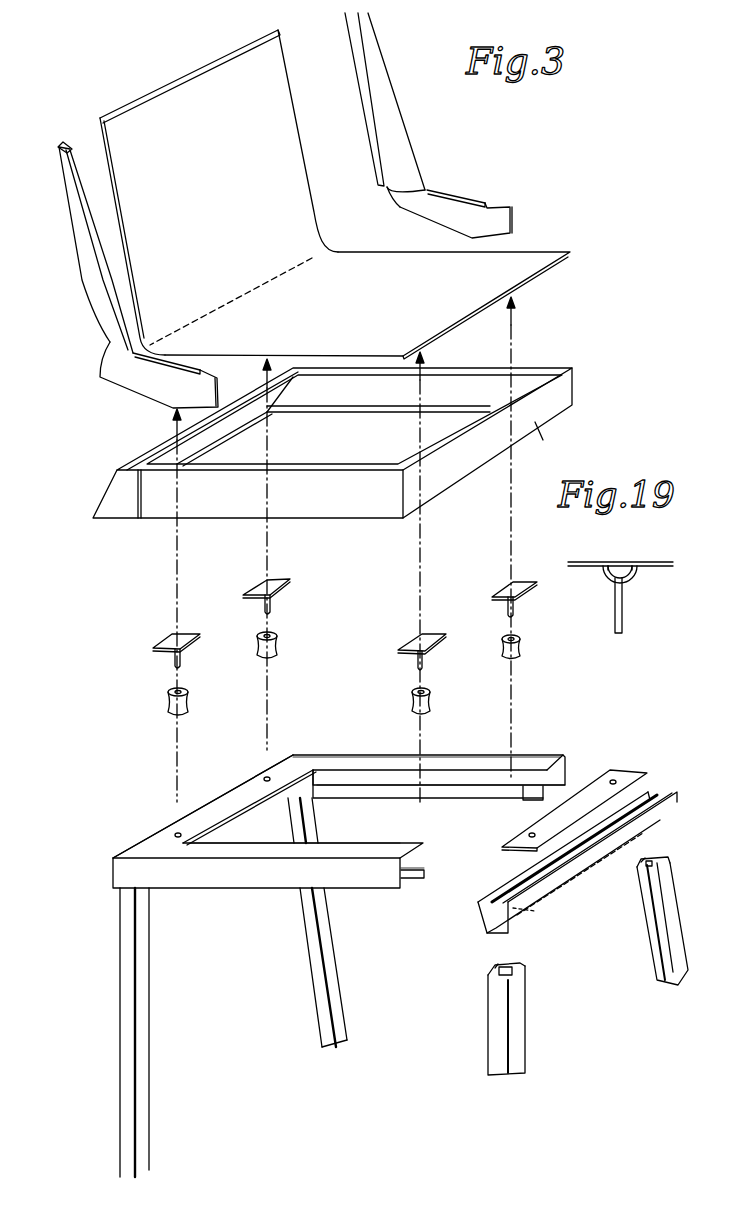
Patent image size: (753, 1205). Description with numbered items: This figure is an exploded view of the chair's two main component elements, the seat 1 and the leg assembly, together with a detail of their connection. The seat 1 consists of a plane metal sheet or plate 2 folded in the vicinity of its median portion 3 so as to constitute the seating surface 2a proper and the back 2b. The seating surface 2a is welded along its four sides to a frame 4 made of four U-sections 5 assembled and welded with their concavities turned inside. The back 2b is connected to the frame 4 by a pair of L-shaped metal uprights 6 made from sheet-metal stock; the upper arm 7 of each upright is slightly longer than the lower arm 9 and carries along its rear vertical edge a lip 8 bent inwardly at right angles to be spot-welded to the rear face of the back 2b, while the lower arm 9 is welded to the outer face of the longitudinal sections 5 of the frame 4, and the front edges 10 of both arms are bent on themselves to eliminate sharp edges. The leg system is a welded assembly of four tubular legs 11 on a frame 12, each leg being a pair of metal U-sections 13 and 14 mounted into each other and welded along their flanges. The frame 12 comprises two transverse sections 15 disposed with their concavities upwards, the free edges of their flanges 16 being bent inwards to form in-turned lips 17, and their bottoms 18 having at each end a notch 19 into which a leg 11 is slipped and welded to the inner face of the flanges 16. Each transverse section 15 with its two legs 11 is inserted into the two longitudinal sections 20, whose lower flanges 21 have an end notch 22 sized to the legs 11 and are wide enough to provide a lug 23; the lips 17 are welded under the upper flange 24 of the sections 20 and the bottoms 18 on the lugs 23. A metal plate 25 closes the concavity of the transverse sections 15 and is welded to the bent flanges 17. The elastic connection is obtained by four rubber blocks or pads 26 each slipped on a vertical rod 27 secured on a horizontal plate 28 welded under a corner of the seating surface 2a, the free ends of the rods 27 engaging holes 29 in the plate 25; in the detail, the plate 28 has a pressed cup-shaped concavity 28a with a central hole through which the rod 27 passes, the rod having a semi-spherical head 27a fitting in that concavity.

In FIG. 3, the seat 1 is at (597, 106).
In FIG. 3, the metal sheet or plate 2 is at (335, 194).
In FIG. 3, the seating surface 2a is at (367, 305).
In FIG. 19, the seating surface 2a is at (594, 561).
In FIG. 3, the back 2b is at (219, 192).
In FIG. 3, the median portion 3 is at (310, 258).
In FIG. 3, the frame 4 is at (332, 445).
In FIG. 3, the U-sections 5 is at (170, 497).
In FIG. 3, the L-shaped metal uprights 6 is at (274, 218).
In FIG. 3, the upper arm 7 is at (72, 202).
In FIG. 3, the lip 8 is at (62, 142).
In FIG. 3, the lower arm 9 is at (147, 385).
In FIG. 3, the front edges 10 is at (110, 378).
In FIG. 3, the tubular legs 11 is at (153, 1055).
In FIG. 3, the frame of the leg assembly 12 is at (406, 947).
In FIG. 3, the outer leg U-section 13 is at (567, 966).
In FIG. 3, the inner leg U-section 14 is at (662, 947).
In FIG. 3, the transverse sections 15 is at (581, 856).
In FIG. 3, the flanges 16 is at (242, 815).
In FIG. 3, the in-turned lips 17 is at (670, 792).
In FIG. 3, the bottoms 18 is at (590, 852).
In FIG. 3, the notch 19 is at (503, 927).
In FIG. 3, the longitudinal sections 20 is at (409, 829).
In FIG. 3, the lower flanges 21 is at (480, 794).
In FIG. 3, the notch 22 is at (408, 880).
In FIG. 3, the lug 23 is at (423, 867).
In FIG. 3, the upper flange 24 is at (373, 753).
In FIG. 3, the metal plate 25 is at (207, 818).
In FIG. 3, the rubber blocks or pads 26 is at (503, 654).
In FIG. 3, the vertical rod 27 is at (508, 608).
In FIG. 19, the vertical rod 27 is at (623, 618).
In FIG. 19, the semi-spherical head 27a is at (623, 567).
In FIG. 3, the horizontal plate 28 is at (505, 585).
In FIG. 19, the horizontal plate 28 is at (613, 583).
In FIG. 19, the cup-shaped concavity 28a is at (608, 579).
In FIG. 3, the holes 29 is at (262, 779).